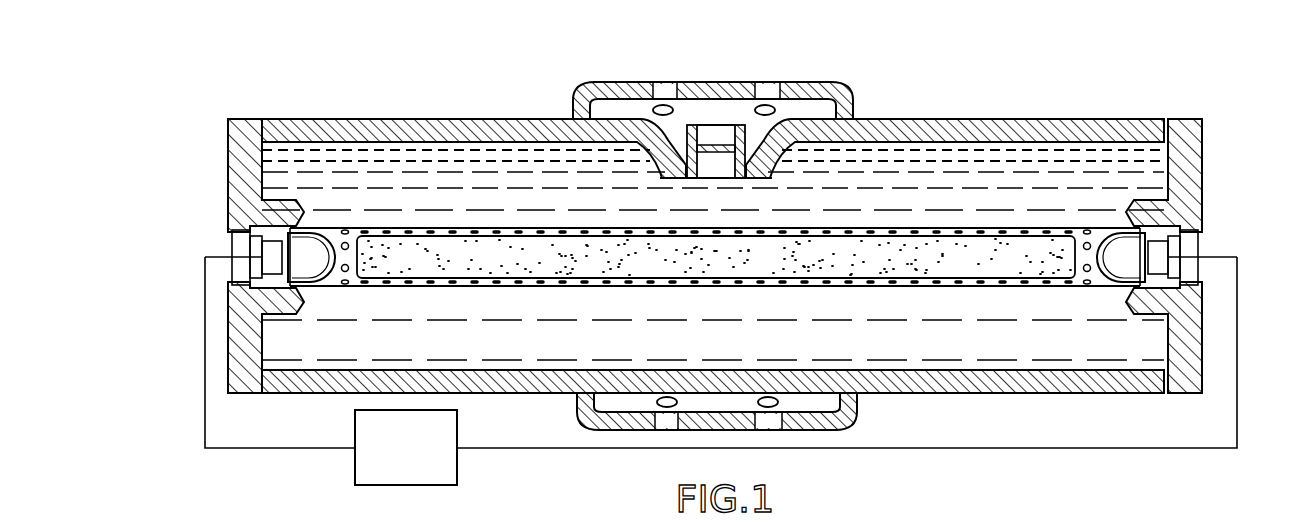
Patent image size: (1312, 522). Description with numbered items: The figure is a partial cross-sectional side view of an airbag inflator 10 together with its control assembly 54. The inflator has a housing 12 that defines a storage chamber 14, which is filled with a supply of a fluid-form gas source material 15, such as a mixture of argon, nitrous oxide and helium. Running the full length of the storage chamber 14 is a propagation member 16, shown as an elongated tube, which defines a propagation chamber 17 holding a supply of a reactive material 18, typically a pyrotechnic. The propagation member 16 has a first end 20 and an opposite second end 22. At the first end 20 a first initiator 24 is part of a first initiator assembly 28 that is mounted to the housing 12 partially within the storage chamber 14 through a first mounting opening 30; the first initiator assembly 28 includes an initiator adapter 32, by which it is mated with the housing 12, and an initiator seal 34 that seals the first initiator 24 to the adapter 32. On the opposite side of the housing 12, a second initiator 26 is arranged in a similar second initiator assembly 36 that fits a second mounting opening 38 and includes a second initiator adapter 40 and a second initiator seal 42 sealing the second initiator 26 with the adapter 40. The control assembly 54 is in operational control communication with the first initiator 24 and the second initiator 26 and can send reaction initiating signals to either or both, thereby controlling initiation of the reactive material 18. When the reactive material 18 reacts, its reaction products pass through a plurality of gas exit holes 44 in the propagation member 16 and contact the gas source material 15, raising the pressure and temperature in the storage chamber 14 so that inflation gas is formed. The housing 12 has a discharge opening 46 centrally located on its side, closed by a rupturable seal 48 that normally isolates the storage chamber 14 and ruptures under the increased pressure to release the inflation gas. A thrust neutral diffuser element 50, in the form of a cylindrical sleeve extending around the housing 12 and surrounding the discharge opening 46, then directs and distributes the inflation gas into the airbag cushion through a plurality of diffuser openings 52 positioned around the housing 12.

The airbag inflator 10 is at (711, 209).
The housing 12 is at (525, 118).
The storage chamber 14 is at (455, 165).
The gas source material 15 is at (915, 165).
The propagation member 16 is at (715, 221).
The propagation chamber 17 is at (1062, 298).
The reactive material 18 is at (820, 258).
The first end 20 is at (345, 225).
The second end 22 is at (1075, 225).
The first initiator 24 is at (305, 258).
The second initiator 26 is at (1125, 245).
The first initiator assembly 28 is at (234, 256).
The first mounting opening 30 is at (240, 215).
The initiator adapter 32 is at (290, 300).
The initiator seal 34 is at (240, 300).
The second initiator assembly 36 is at (1199, 256).
The second mounting opening 38 is at (1190, 205).
The second initiator adapter 40 is at (1140, 300).
The second initiator seal 42 is at (1205, 308).
The gas exit holes 44 is at (347, 272).
The discharge opening 46 is at (697, 178).
The rupturable seal 48 is at (722, 145).
The thrust neutral diffuser element 50 is at (800, 83).
The diffuser openings 52 is at (666, 85).
The control assembly 54 is at (721, 371).